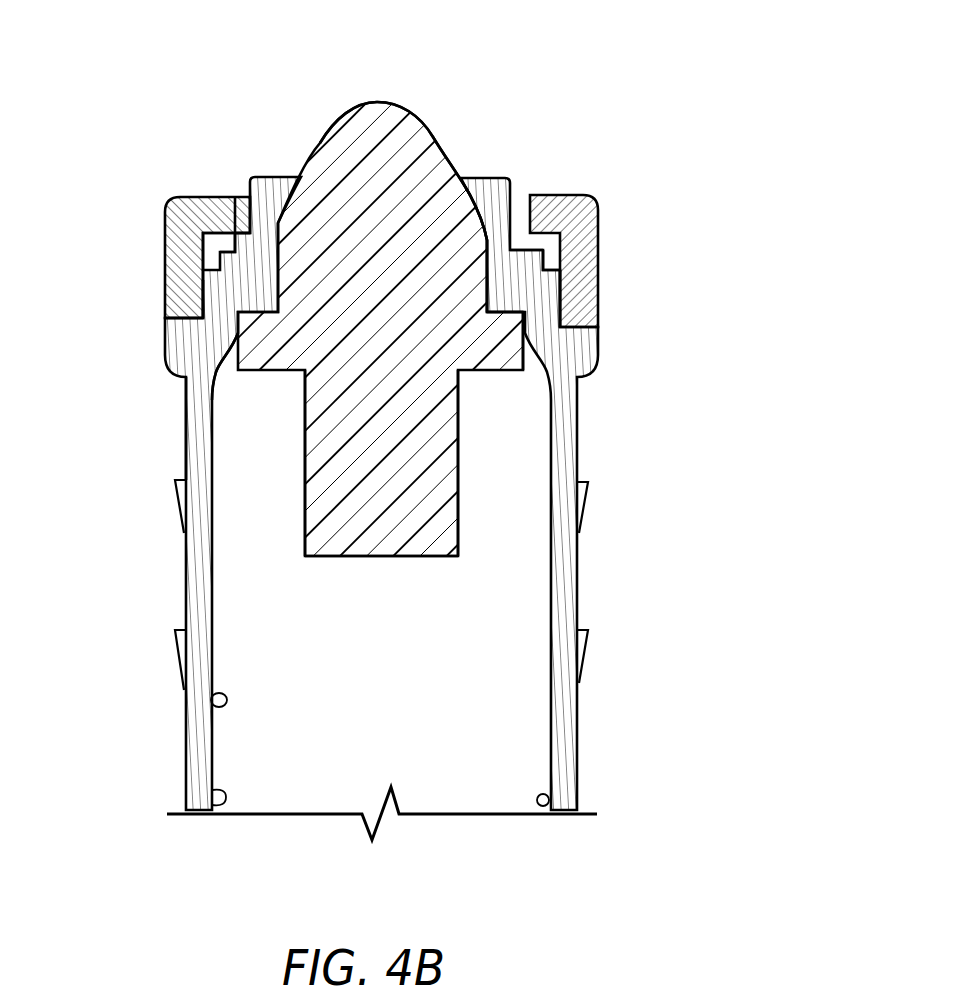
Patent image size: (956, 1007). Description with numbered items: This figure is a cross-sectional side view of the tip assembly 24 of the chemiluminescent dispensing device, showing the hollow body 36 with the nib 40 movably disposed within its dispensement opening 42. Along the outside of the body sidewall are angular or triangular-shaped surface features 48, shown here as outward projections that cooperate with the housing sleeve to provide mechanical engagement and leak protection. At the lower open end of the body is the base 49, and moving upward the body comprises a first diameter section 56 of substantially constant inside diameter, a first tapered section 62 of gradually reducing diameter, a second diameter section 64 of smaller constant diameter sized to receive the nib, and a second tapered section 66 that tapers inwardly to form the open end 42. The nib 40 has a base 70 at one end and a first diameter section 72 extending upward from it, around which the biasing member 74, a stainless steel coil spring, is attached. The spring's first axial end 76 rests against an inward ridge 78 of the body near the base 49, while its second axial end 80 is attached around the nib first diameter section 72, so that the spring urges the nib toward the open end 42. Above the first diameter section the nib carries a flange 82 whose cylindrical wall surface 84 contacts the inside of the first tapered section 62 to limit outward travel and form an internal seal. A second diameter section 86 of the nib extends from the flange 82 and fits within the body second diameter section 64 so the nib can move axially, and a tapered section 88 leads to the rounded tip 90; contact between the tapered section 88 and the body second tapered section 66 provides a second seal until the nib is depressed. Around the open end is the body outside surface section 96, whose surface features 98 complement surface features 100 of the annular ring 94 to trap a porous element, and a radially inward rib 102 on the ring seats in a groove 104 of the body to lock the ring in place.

The tip assembly 24 is at (178, 388).
The hollow body 36 is at (567, 707).
The nib 40 is at (445, 420).
The dispensement opening 42 is at (463, 177).
The body surface features 48 is at (176, 658).
The base 49 is at (200, 816).
The first diameter section 56 is at (212, 694).
The first tapered section 62 is at (497, 306).
The second diameter section 64 is at (485, 244).
The second tapered section 66 is at (455, 150).
The base 70 is at (440, 560).
The first diameter section 72 is at (458, 512).
The biasing member 74 is at (266, 592).
The first axial end 76 is at (212, 792).
The inward ridge 78 is at (545, 800).
The second axial end 80 is at (293, 385).
The flange 82 is at (512, 343).
The cylindrical wall surface 84 is at (523, 343).
The second diameter section 86 is at (488, 270).
The tapered section 88 is at (473, 212).
The tip 90 is at (381, 100).
The annular ring 94 is at (189, 190).
The body outside surface section 96 is at (230, 262).
The surface features 98 is at (500, 247).
The surface features 100 is at (203, 238).
The rib 102 is at (187, 317).
The groove 104 is at (213, 320).